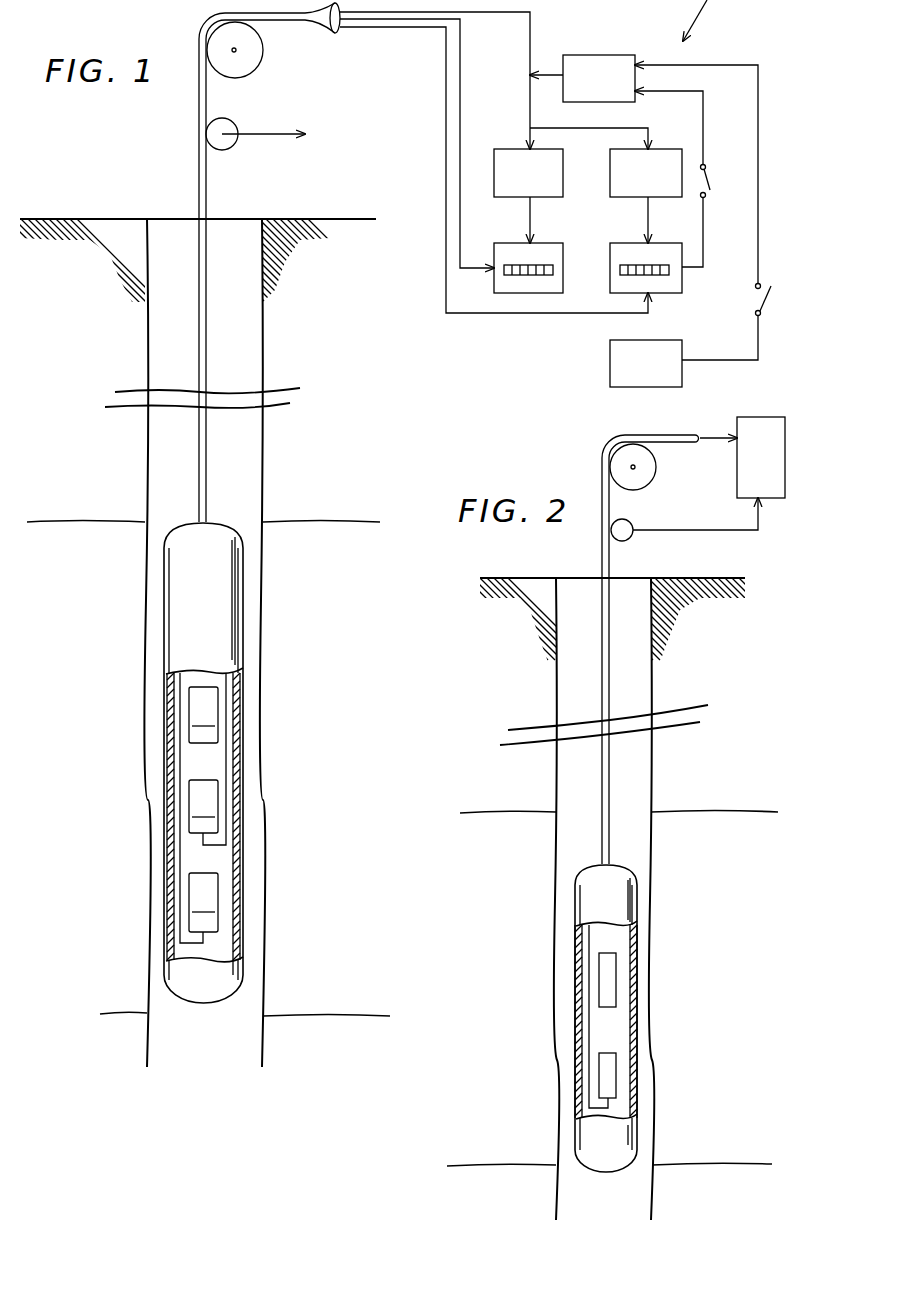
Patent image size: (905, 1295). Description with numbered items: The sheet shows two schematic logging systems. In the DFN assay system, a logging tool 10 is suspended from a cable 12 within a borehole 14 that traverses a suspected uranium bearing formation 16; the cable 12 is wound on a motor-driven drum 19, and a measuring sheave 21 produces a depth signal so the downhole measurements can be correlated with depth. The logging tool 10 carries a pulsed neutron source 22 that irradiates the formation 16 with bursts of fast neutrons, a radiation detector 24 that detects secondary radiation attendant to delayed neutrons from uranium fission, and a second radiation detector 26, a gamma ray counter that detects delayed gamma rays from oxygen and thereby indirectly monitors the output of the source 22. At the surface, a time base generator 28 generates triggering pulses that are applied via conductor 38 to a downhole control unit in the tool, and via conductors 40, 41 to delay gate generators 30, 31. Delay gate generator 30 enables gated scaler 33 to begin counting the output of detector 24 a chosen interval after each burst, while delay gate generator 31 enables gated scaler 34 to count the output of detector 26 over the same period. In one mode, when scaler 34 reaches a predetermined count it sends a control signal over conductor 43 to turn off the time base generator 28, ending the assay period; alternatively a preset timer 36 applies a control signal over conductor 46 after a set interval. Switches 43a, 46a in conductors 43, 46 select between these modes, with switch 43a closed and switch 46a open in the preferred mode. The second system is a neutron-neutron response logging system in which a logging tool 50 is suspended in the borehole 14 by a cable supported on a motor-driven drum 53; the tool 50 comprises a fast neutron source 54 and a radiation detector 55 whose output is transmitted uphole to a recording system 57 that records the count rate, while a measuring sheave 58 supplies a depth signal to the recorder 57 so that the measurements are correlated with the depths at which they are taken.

In FIG. 1, the logging tool 10 is at (151, 763).
In FIG. 1, the cable 12 is at (199, 458).
In FIG. 1, the borehole 14 is at (263, 458).
In FIG. 2, the borehole 14 is at (652, 658).
In FIG. 1, the formation 16 is at (338, 720).
In FIG. 2, the formation 16 is at (742, 1008).
In FIG. 1, the motor-driven drum 19 is at (263, 58).
In FIG. 1, the measuring sheave 21 is at (238, 146).
In FIG. 1, the pulsed neutron source 22 is at (203, 715).
In FIG. 1, the radiation detector 24 is at (203, 806).
In FIG. 1, the second radiation detector 26 is at (203, 902).
In FIG. 1, the time base generator 28 is at (599, 78).
In FIG. 1, the delay gate generator 30 is at (528, 173).
In FIG. 1, the delay gate generator 31 is at (646, 173).
In FIG. 1, the gated scaler 33 is at (528, 268).
In FIG. 1, the gated scaler 34 is at (646, 268).
In FIG. 1, the preset timer 36 is at (646, 363).
In FIG. 1, the conductor 38 is at (532, 18).
In FIG. 1, the conductor 40 is at (530, 127).
In FIG. 1, the conductor 41 is at (648, 128).
In FIG. 1, the conductor 43 is at (705, 127).
In FIG. 1, the switch 43a is at (709, 181).
In FIG. 1, the conductor 46 is at (759, 160).
In FIG. 1, the switch 46a is at (773, 289).
In FIG. 2, the logging tool 50 is at (562, 1018).
In FIG. 2, the motor-driven drum 53 is at (657, 468).
In FIG. 2, the fast neutron source 54 is at (600, 980).
In FIG. 2, the radiation detector 55 is at (600, 1072).
In FIG. 2, the recording system 57 is at (761, 457).
In FIG. 2, the measuring sheave 58 is at (634, 522).